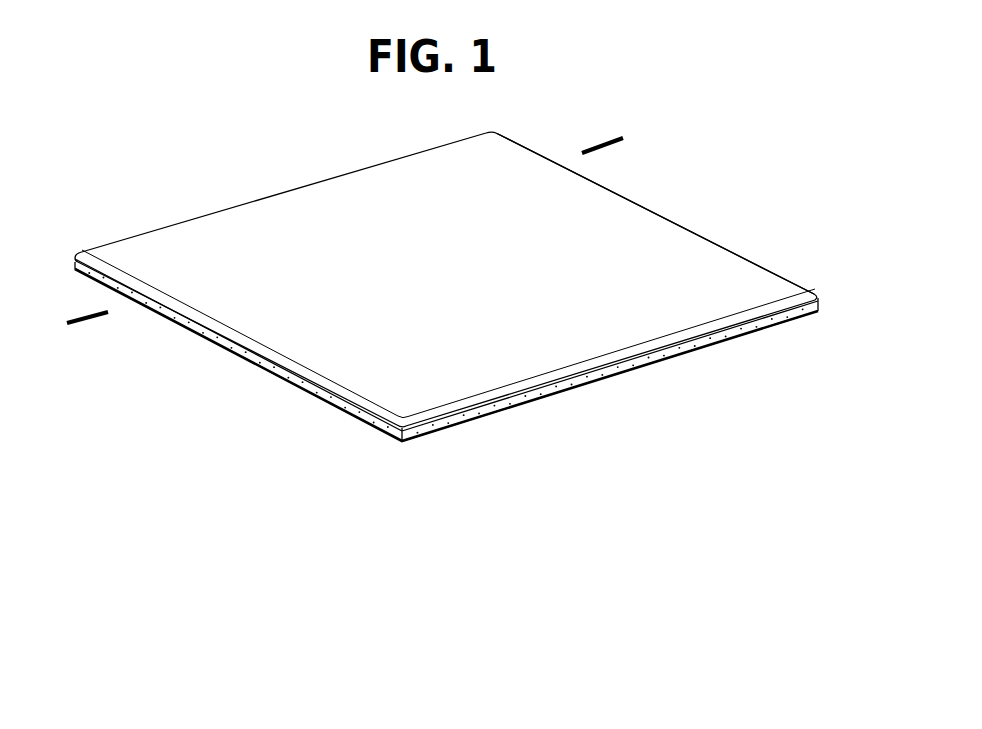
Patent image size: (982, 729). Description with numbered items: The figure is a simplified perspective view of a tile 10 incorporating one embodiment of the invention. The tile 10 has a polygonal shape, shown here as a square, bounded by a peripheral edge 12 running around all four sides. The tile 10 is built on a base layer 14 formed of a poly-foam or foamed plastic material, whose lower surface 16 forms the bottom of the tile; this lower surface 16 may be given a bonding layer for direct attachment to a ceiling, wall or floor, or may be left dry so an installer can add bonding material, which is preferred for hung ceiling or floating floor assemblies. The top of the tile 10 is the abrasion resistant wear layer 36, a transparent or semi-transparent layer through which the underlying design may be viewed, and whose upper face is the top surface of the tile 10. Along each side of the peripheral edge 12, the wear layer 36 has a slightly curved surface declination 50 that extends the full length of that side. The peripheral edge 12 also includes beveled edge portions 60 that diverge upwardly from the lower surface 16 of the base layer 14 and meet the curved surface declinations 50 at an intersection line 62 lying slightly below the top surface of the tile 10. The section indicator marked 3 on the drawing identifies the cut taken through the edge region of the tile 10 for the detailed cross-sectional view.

The tile 10 is at (457, 255).
The peripheral edge 12 is at (736, 250).
The base layer 14 is at (342, 405).
The lower surface 16 is at (463, 423).
The wear layer 36 is at (447, 270).
The surface declination 50 is at (223, 332).
The beveled edge portion 60 is at (700, 348).
The intersection line 62 is at (783, 313).
The section line 3- 3 is at (613, 147).